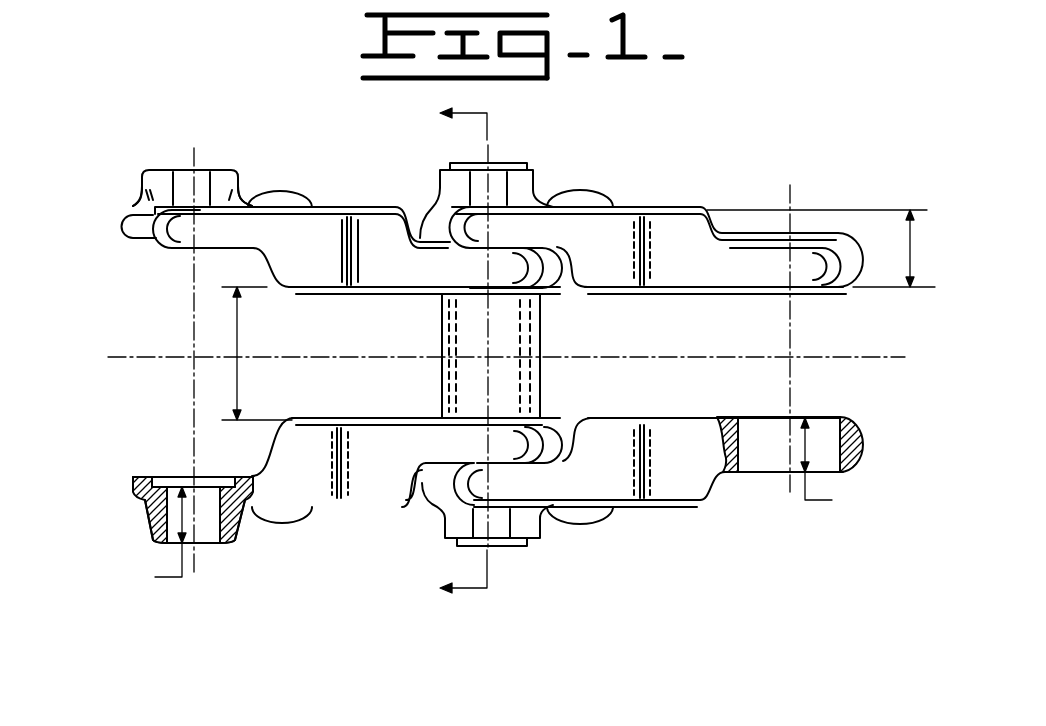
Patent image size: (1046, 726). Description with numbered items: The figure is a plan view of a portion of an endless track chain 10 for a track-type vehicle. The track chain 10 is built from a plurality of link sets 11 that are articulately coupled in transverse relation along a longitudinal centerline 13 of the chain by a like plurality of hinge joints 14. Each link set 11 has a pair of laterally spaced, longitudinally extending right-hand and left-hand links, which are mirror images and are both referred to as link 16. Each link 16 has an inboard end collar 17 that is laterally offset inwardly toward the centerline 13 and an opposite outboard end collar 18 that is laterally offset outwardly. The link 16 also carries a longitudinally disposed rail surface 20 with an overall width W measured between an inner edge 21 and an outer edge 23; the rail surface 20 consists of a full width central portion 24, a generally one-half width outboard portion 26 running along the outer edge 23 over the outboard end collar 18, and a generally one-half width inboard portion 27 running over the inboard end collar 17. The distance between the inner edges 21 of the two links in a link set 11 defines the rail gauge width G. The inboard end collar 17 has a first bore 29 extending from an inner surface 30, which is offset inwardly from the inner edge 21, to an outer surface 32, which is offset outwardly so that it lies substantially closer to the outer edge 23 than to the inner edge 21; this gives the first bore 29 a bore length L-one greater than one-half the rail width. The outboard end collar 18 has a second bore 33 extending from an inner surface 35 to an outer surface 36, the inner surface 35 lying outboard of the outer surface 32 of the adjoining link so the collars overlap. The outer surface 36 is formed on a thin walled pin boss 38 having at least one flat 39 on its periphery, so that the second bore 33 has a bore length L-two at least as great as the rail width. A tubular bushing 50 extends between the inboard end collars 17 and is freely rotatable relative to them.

The endless track chain 10 is at (286, 90).
The link set 11 is at (376, 203).
The longitudinal centerline 13 is at (146, 345).
The hinge joint 14 is at (518, 163).
The link 16 is at (327, 292).
The inboard end collar 17 is at (548, 285).
The outboard end collar 18 is at (127, 228).
The rail surface 20 is at (322, 260).
The inner edge 21 is at (653, 293).
The outer edge 23 is at (666, 205).
The central portion 24 is at (378, 283).
The outboard portion 26 is at (205, 240).
The inboard portion 27 is at (808, 281).
The first bore 29 is at (752, 430).
The inner surface 30 is at (836, 417).
The outer surface 32 is at (843, 471).
The second bore 33 is at (222, 546).
The inner surface 35 is at (157, 476).
The outer surface 36 is at (160, 552).
The pin boss 38 is at (140, 187).
The flat 39 is at (205, 188).
The tubular bushing 50 is at (448, 382).